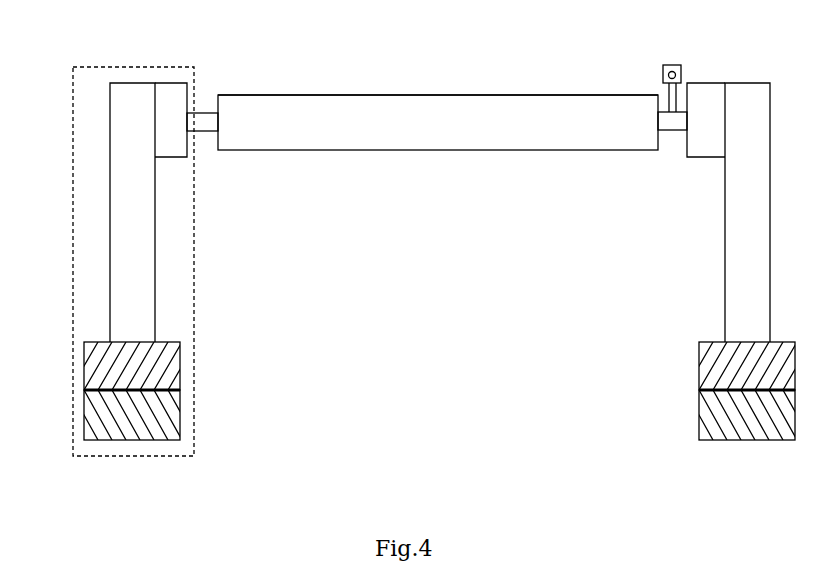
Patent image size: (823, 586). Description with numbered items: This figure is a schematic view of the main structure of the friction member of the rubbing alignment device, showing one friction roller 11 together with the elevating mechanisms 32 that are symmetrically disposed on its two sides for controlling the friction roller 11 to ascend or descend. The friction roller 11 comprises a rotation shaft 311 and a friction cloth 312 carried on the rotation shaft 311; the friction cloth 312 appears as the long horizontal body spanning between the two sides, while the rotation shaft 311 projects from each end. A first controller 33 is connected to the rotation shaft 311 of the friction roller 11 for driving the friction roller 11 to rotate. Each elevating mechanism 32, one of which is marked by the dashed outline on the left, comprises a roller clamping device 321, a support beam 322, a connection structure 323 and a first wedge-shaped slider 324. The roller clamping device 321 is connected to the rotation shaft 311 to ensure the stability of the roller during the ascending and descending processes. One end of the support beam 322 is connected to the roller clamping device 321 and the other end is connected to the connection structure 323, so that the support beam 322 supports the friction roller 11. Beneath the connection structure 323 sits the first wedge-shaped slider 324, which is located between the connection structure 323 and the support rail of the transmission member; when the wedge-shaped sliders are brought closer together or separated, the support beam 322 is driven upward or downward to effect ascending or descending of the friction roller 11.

The friction roller 11 is at (342, 85).
The elevating mechanism 32 is at (65, 223).
The first controller 33 is at (665, 72).
The rotation shaft 311 is at (197, 122).
The friction cloth 312 is at (433, 112).
The roller clamping device 321 is at (188, 155).
The support beam 322 is at (155, 208).
The connection structure 323 is at (175, 353).
The first wedge-shaped slider 324 is at (167, 417).